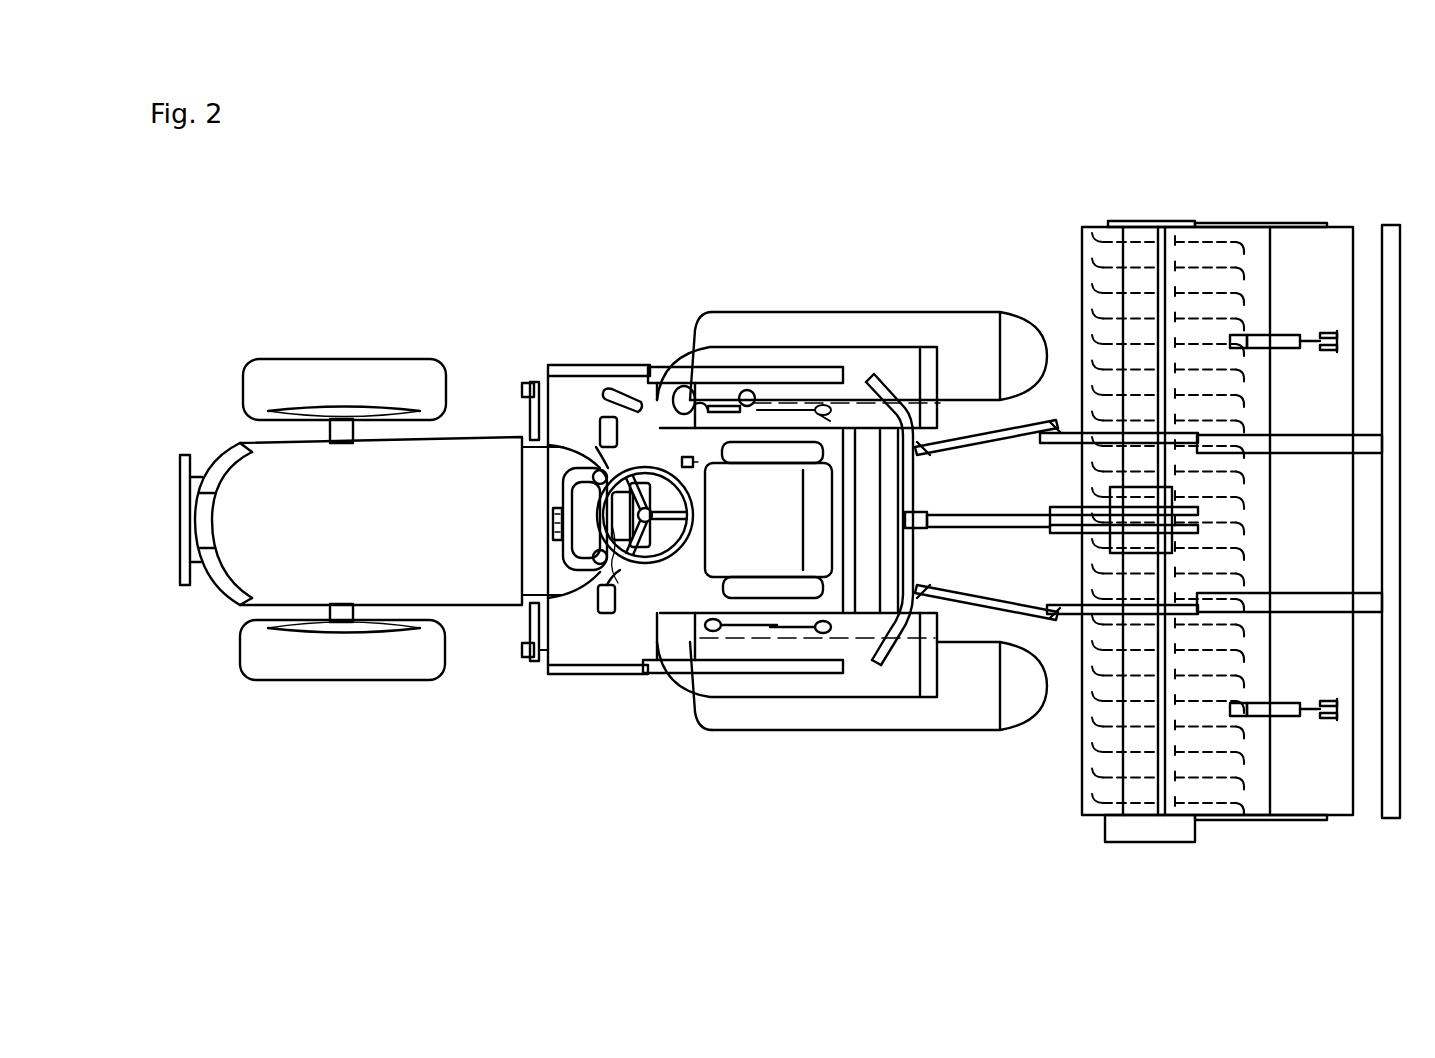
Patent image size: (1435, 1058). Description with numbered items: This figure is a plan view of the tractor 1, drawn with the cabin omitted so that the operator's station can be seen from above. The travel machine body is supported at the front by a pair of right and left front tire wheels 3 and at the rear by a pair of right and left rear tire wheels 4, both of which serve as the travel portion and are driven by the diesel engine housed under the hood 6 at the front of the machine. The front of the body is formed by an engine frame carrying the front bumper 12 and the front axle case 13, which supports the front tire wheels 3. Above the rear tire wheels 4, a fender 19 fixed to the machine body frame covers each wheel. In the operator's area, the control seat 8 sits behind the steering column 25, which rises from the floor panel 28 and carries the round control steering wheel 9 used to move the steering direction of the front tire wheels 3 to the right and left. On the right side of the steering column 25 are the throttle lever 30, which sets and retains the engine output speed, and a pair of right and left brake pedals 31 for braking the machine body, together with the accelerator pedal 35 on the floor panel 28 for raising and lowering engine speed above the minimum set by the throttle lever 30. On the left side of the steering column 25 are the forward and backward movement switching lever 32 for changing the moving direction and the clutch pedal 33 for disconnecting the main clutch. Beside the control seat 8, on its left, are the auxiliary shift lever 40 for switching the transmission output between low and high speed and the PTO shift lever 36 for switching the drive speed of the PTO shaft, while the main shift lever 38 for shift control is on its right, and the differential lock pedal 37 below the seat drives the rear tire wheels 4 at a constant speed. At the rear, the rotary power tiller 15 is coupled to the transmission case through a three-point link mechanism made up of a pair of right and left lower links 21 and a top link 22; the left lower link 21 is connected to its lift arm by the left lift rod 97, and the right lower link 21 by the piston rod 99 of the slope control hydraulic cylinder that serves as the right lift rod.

The tractor 1 is at (931, 257).
The front tire wheels 3 is at (330, 375).
The rear tire wheels 4 is at (860, 330).
The hood 6 is at (278, 470).
The control seat 8 is at (768, 545).
The control steering wheel 9 is at (646, 665).
The front bumper 12 is at (180, 513).
The front axle case 13 is at (343, 418).
The rotary power tiller 15 is at (1262, 255).
The fender 19 is at (780, 360).
The lower links 21 is at (1001, 415).
The top link 22 is at (968, 530).
The steering column 25 is at (663, 487).
The floor panel 28 is at (577, 648).
The throttle lever 30 is at (566, 440).
The brake pedals 31 is at (615, 440).
The forward and backward movement switching lever 32 is at (628, 590).
The clutch pedal 33 is at (580, 600).
The accelerator pedal 35 is at (620, 390).
The PTO shift lever 36 is at (840, 682).
The differential lock pedal 37 is at (684, 457).
The main shift lever 38 is at (717, 370).
The auxiliary shift lever 40 is at (710, 655).
The left lift rod 97 is at (928, 588).
The piston rod 99 is at (930, 458).